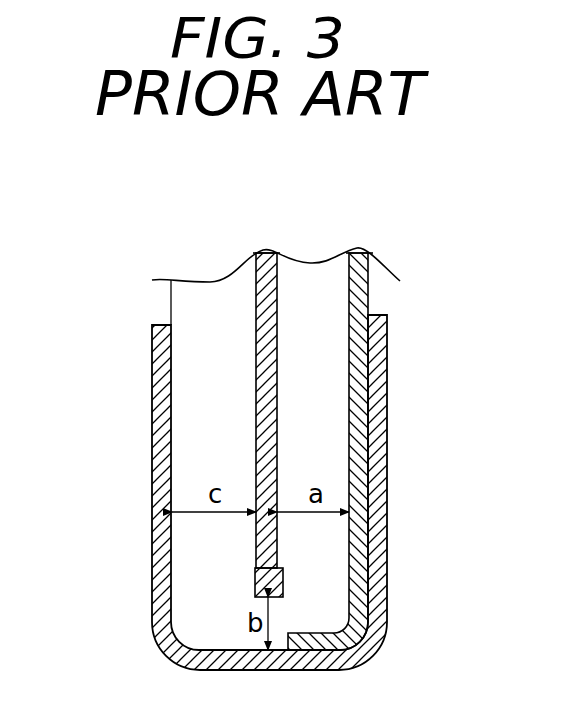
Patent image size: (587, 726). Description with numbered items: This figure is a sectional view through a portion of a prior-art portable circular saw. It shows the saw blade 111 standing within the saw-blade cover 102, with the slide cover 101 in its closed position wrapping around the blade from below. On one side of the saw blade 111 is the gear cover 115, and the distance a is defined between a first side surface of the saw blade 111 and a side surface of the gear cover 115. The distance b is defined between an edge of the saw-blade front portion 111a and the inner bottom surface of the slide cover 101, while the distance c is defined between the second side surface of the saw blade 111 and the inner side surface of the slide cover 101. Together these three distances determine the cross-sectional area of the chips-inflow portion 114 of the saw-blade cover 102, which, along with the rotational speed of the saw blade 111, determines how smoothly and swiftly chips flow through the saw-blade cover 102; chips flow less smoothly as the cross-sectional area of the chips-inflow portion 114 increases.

The slide cover 101 is at (152, 467).
The saw-blade cover 102 is at (160, 297).
The saw blade 111 is at (265, 252).
The saw-blade front portion 111a is at (283, 580).
The chips-inflow portion 114 is at (217, 618).
The gear cover 115 is at (355, 278).